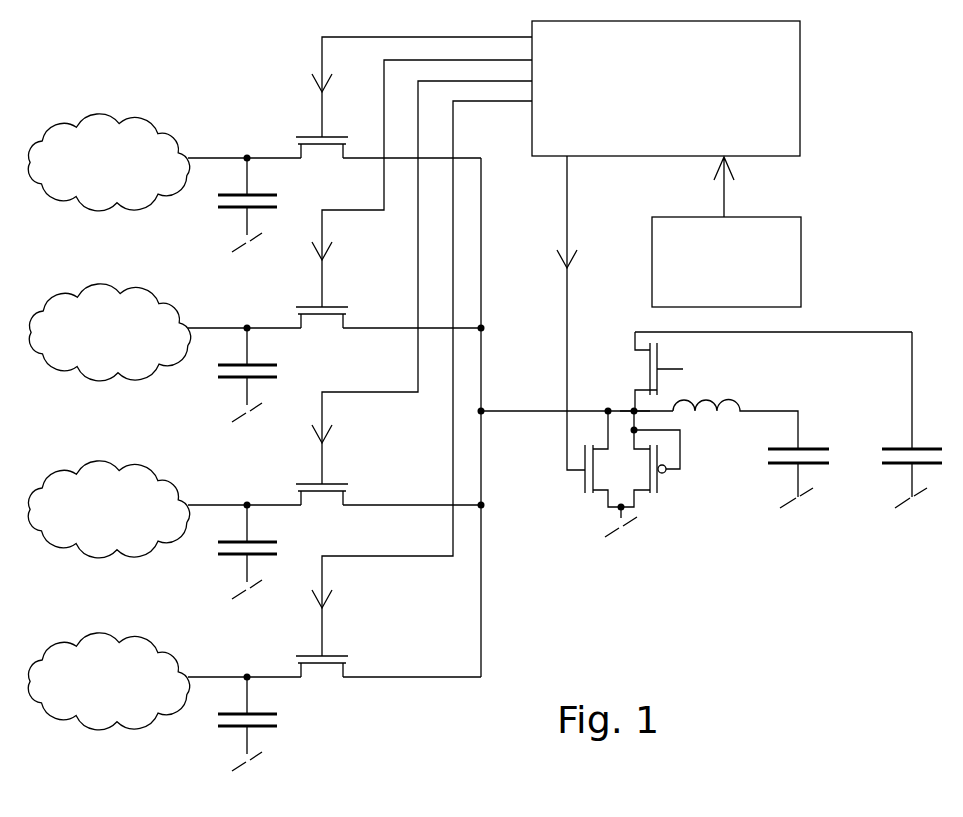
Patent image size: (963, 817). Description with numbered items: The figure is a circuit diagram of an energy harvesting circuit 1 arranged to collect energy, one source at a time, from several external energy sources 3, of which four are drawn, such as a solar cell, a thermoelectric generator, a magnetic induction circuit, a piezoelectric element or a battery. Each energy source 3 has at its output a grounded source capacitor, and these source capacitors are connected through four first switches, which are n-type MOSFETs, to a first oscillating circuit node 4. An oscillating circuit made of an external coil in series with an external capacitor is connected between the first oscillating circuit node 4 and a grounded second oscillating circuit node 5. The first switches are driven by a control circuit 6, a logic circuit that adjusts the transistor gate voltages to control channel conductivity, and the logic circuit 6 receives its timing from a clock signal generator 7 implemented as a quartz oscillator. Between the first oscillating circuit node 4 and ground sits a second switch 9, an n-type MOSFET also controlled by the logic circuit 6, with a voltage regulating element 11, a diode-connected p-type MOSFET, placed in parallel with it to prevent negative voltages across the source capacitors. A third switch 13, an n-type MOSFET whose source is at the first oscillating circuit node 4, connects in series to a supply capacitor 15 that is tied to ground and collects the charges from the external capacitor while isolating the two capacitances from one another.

The energy harvesting circuit 1 is at (233, 71).
The energy source 3 is at (148, 140).
The first oscillating circuit node 4 is at (633, 409).
The second oscillating circuit node 5 is at (795, 470).
The control circuit 6 is at (755, 92).
The clock signal generator 7 is at (765, 260).
The second switch 9 is at (582, 479).
The voltage regulating element 11 is at (661, 481).
The third switch 13 is at (660, 359).
The supply capacitor 15 is at (903, 449).